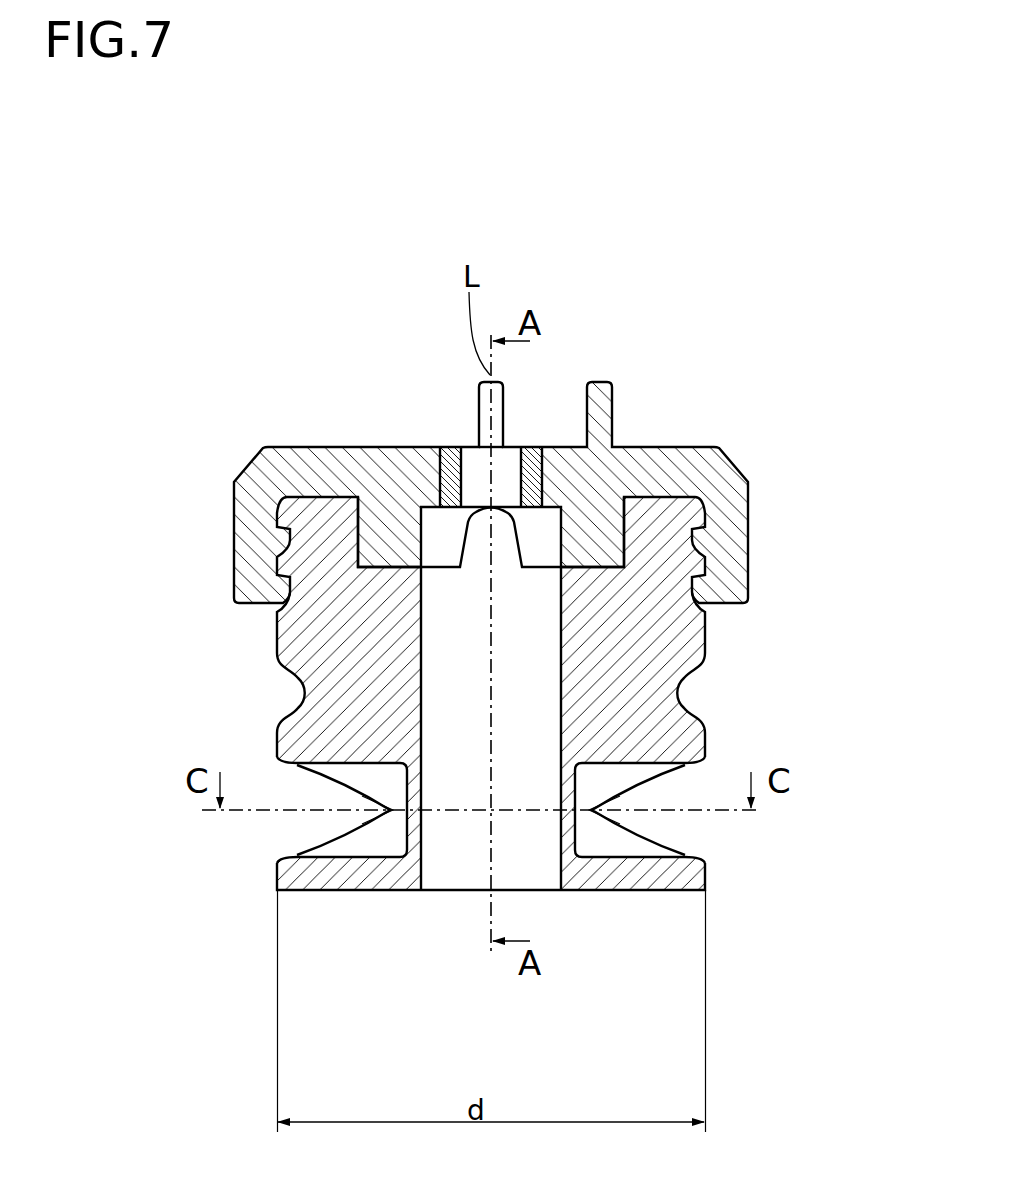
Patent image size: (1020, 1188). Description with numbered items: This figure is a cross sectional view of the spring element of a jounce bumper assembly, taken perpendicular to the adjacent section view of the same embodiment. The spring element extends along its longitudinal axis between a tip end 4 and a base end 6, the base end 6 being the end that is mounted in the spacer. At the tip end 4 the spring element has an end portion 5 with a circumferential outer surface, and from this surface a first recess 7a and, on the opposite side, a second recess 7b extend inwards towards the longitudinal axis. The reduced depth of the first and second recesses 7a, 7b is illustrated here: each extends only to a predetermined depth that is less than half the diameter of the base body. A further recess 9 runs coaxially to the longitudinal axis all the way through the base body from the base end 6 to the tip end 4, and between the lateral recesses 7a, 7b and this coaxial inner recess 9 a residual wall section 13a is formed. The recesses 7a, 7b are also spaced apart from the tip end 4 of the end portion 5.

The tip end 4 is at (353, 891).
The end portion 5 is at (157, 753).
The base end 6 is at (315, 470).
The first recess 7a is at (308, 837).
The second recess 7b is at (672, 823).
The further recess 9 is at (475, 603).
The residual wall section 13a is at (421, 828).